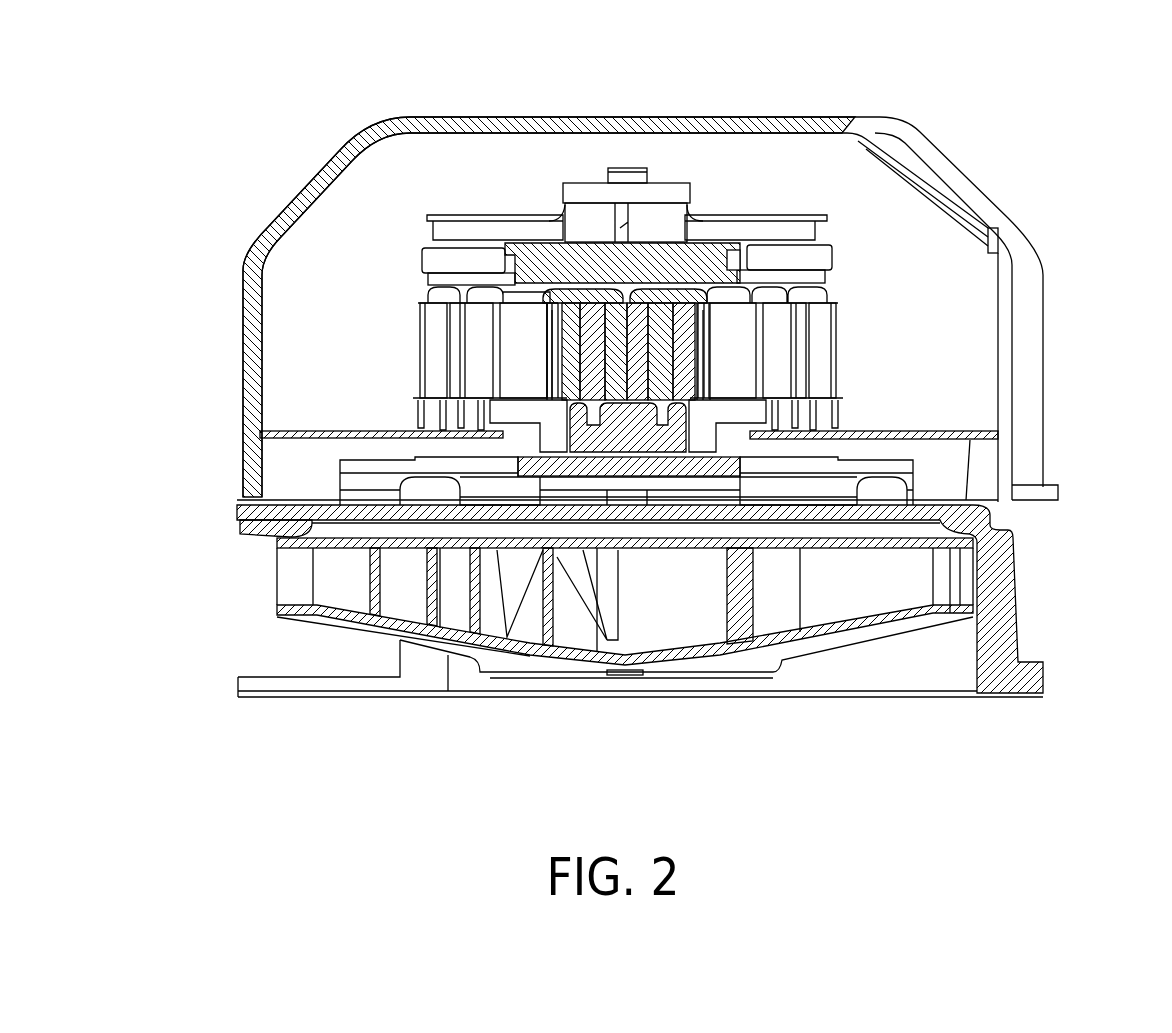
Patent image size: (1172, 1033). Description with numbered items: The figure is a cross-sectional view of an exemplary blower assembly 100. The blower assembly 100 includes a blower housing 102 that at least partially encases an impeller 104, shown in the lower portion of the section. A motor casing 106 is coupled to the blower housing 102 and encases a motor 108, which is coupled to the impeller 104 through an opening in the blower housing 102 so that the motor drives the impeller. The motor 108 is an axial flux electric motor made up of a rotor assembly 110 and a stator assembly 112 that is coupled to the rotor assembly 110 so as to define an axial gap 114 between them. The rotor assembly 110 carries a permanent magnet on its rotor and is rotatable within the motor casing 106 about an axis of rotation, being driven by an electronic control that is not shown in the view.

The blower assembly 100 is at (1087, 158).
The blower housing 102 is at (1012, 590).
The impeller 104 is at (682, 650).
The motor casing 106 is at (918, 142).
The motor 108 is at (393, 283).
The rotor assembly 110 is at (406, 239).
The stator assembly 112 is at (405, 322).
The axial gap 114 is at (836, 290).